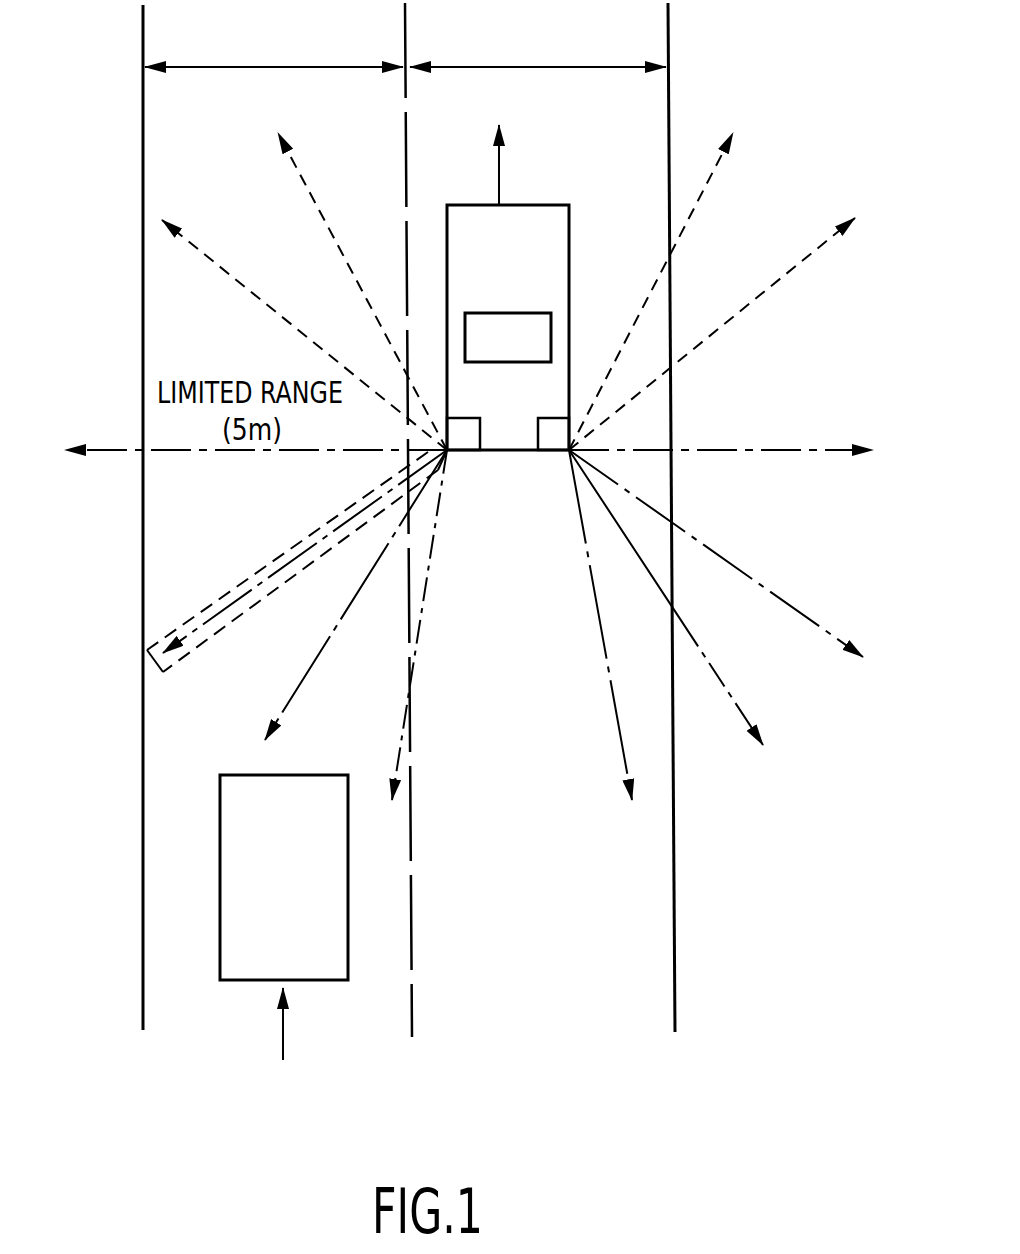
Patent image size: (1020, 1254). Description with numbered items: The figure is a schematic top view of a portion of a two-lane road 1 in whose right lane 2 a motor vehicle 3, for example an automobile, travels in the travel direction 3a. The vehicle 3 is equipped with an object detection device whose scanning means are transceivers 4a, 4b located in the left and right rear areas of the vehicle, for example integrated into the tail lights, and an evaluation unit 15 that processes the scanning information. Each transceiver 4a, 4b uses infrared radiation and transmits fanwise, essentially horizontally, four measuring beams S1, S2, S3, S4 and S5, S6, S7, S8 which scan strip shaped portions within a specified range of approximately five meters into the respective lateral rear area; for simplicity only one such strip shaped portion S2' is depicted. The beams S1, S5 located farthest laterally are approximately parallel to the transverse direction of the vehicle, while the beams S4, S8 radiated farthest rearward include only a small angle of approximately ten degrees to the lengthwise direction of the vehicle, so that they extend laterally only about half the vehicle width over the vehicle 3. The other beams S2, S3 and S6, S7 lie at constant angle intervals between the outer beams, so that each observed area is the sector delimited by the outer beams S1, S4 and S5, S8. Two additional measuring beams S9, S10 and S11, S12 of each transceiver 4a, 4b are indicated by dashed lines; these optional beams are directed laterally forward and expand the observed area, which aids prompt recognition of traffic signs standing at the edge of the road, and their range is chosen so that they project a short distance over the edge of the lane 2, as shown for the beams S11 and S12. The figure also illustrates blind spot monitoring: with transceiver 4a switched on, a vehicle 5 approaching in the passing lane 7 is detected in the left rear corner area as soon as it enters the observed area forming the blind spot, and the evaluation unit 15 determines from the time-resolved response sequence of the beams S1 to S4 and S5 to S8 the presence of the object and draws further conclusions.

The two-lane road 1 is at (668, 100).
The right lane 2 is at (615, 124).
The passing lane 7 is at (213, 158).
The motor vehicle 3 is at (569, 228).
The travel direction 3a is at (499, 185).
The evaluation unit 15 is at (551, 340).
The transceiver 4a is at (464, 453).
The transceiver 4b is at (548, 453).
The vehicle 5 is at (348, 860).
The measuring beam S1 is at (205, 455).
The measuring beam S2 is at (305, 551).
The strip shaped portion S2' is at (297, 578).
The measuring beam S3 is at (393, 535).
The measuring beam S4 is at (425, 588).
The measuring beam S5 is at (745, 453).
The measuring beam S6 is at (750, 578).
The measuring beam S7 is at (698, 654).
The measuring beam S8 is at (602, 642).
The additional measuring beam S9 is at (253, 297).
The additional measuring beam S10 is at (347, 263).
The additional measuring beam S11 is at (742, 307).
The additional measuring beam S12 is at (700, 197).